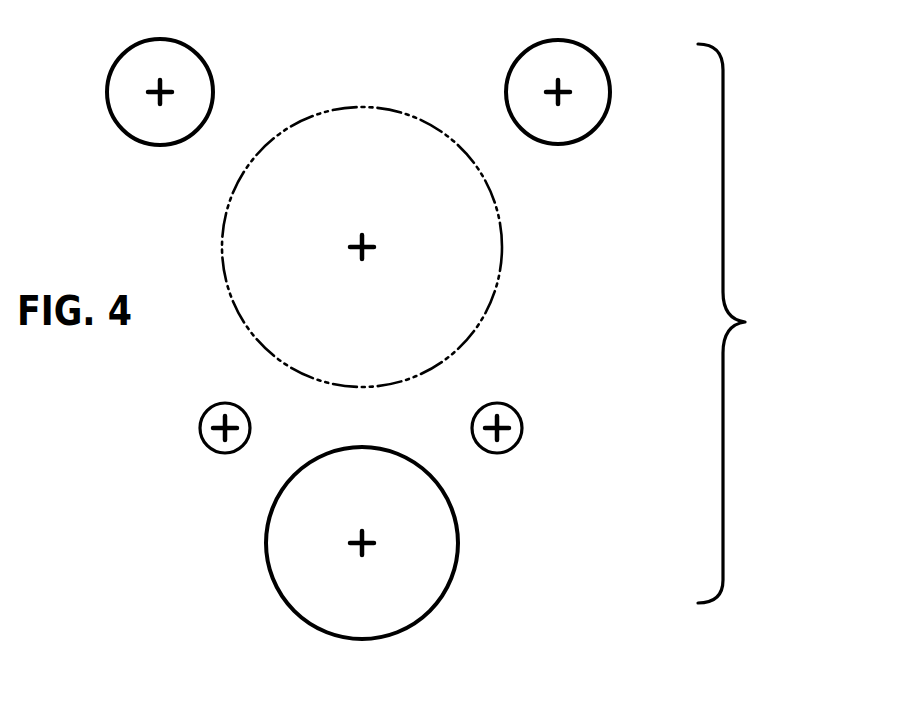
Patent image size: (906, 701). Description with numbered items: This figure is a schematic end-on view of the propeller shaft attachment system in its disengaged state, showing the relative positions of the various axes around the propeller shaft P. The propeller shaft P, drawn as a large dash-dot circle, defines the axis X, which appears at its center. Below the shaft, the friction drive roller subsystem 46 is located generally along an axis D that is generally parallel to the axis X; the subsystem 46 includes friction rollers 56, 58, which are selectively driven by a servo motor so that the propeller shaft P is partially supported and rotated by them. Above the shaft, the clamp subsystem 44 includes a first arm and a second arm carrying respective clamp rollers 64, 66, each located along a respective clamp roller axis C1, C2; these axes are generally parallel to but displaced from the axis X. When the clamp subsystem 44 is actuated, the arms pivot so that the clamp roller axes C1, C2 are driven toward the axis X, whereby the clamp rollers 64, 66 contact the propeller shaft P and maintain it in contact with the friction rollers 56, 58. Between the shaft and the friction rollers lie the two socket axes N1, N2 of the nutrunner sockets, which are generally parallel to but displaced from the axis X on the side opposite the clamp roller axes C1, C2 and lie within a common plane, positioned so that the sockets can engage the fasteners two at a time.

The clamp subsystem 44 is at (795, 121).
The friction drive roller subsystem 46 is at (540, 553).
The clamp roller 64 is at (156, 105).
The clamp roller 66 is at (599, 125).
The friction roller 56 is at (314, 545).
The friction roller 58 is at (314, 545).
The clamp roller axis C1 is at (165, 90).
The clamp roller axis C2 is at (563, 97).
The propeller shaft P is at (383, 250).
The axis X is at (362, 252).
The socket axis N1 is at (202, 436).
The socket axis N2 is at (521, 428).
The axis D is at (370, 545).